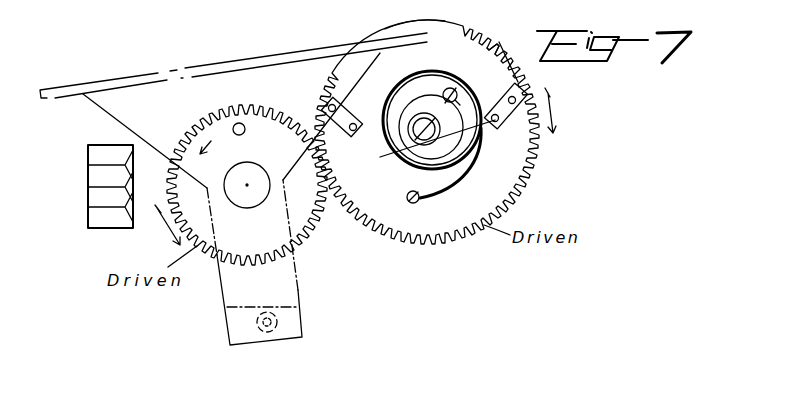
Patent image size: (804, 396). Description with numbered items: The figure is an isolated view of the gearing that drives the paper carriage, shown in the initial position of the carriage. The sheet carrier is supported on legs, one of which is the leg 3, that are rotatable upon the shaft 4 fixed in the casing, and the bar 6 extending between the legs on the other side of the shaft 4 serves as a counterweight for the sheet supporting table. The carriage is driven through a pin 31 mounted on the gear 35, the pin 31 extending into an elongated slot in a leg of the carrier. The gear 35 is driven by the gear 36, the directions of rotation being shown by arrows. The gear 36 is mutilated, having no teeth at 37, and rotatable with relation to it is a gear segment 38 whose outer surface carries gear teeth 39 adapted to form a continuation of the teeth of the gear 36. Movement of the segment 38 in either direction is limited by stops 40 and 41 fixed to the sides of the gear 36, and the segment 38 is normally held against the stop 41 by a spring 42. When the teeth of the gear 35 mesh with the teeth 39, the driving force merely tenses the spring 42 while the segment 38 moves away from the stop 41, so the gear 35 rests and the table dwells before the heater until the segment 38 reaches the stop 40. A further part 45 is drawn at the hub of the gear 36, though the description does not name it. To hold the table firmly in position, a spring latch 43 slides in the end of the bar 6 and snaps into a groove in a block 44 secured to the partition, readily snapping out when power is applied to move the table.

The leg 3 is at (297, 270).
The shaft 4 is at (252, 213).
The bar 6 is at (298, 304).
The pin 31 is at (243, 133).
The gear 35 is at (314, 234).
The gear 36 is at (533, 169).
The toothless portion 37 is at (419, 19).
The gear segment 38 is at (433, 112).
The gear teeth 39 is at (499, 42).
The stop 40 is at (343, 125).
The stop 41 is at (512, 113).
The spring 42 is at (450, 194).
The spring latch 43 is at (275, 321).
The block 44 is at (90, 188).
The lever 45 is at (427, 144).